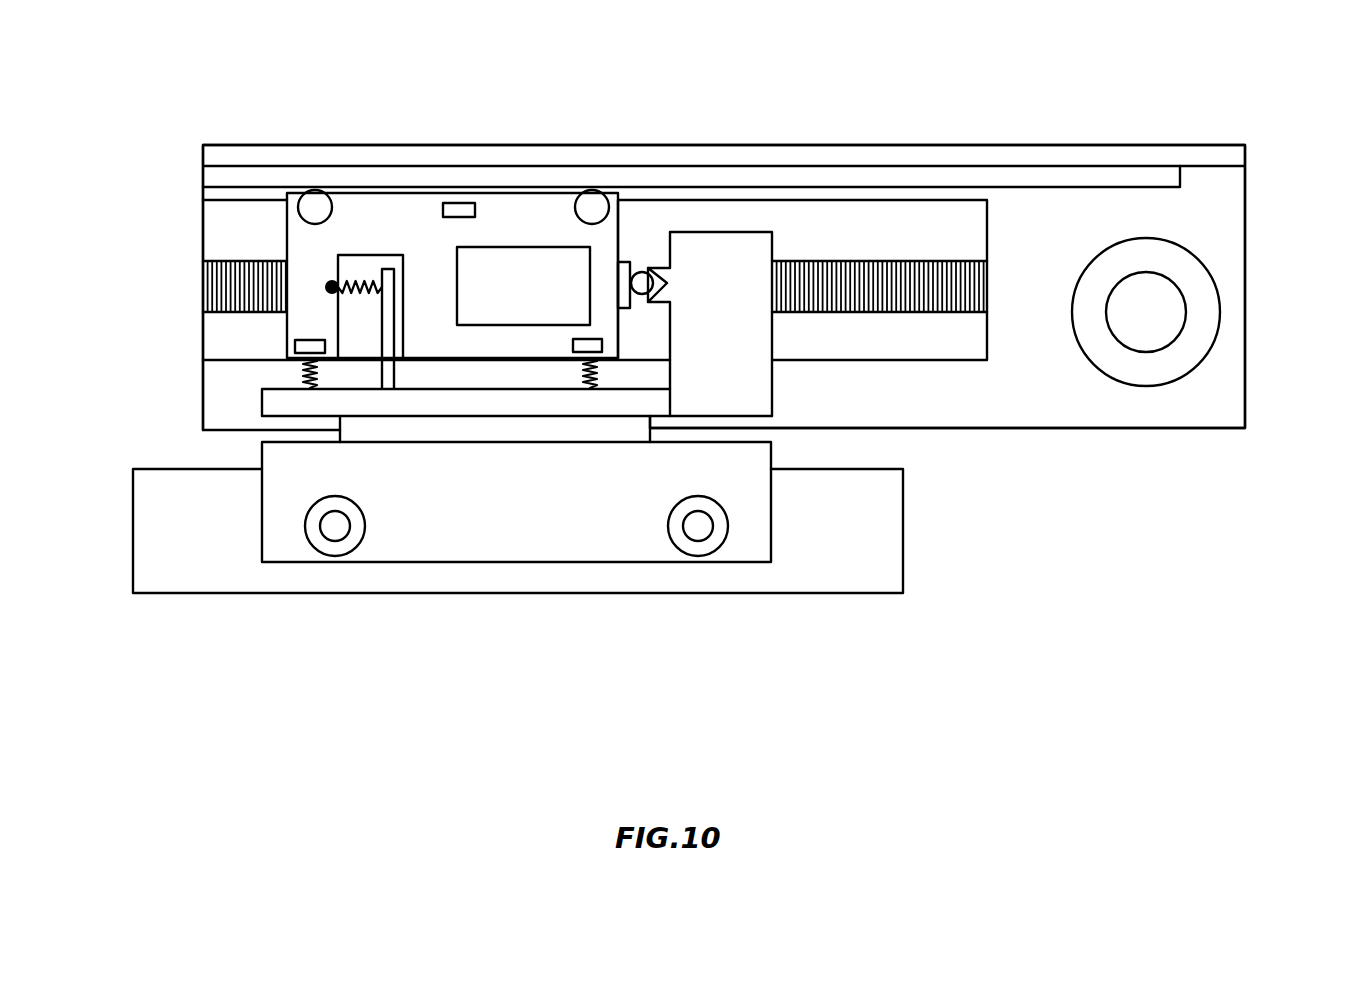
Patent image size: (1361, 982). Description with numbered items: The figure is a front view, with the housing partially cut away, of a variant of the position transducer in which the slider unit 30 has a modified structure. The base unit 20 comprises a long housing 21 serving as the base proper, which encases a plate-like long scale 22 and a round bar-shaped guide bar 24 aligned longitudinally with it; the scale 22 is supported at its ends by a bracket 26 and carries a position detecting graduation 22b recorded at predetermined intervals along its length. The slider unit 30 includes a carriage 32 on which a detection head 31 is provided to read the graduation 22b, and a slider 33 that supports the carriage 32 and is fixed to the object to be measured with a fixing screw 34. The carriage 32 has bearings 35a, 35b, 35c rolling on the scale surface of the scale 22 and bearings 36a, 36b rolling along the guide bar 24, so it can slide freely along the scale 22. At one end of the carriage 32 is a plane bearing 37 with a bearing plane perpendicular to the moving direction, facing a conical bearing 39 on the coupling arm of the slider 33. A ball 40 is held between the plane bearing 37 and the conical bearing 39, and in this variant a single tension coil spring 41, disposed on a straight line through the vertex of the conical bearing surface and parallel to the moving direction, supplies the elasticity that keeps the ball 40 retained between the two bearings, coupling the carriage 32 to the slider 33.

The base unit 20 is at (1115, 60).
The housing 21 is at (1078, 152).
The scale 22 is at (915, 222).
The graduation 22b is at (893, 292).
The guide bar 24 is at (1170, 177).
The bracket 26 is at (1157, 362).
The slider unit 30 is at (607, 678).
The detection head 31 is at (495, 303).
The carriage 32 is at (530, 338).
The slider 33 is at (562, 537).
The fixing screw 34 is at (698, 530).
The bearing 35a is at (295, 346).
The bearing 35b is at (600, 339).
The bearing 35c is at (455, 203).
The bearing 36a is at (312, 200).
The bearing 36b is at (592, 207).
The plane bearing 37 is at (630, 262).
The conical bearing 39 is at (670, 283).
The ball 40 is at (642, 283).
The tension coil spring 41 is at (357, 258).